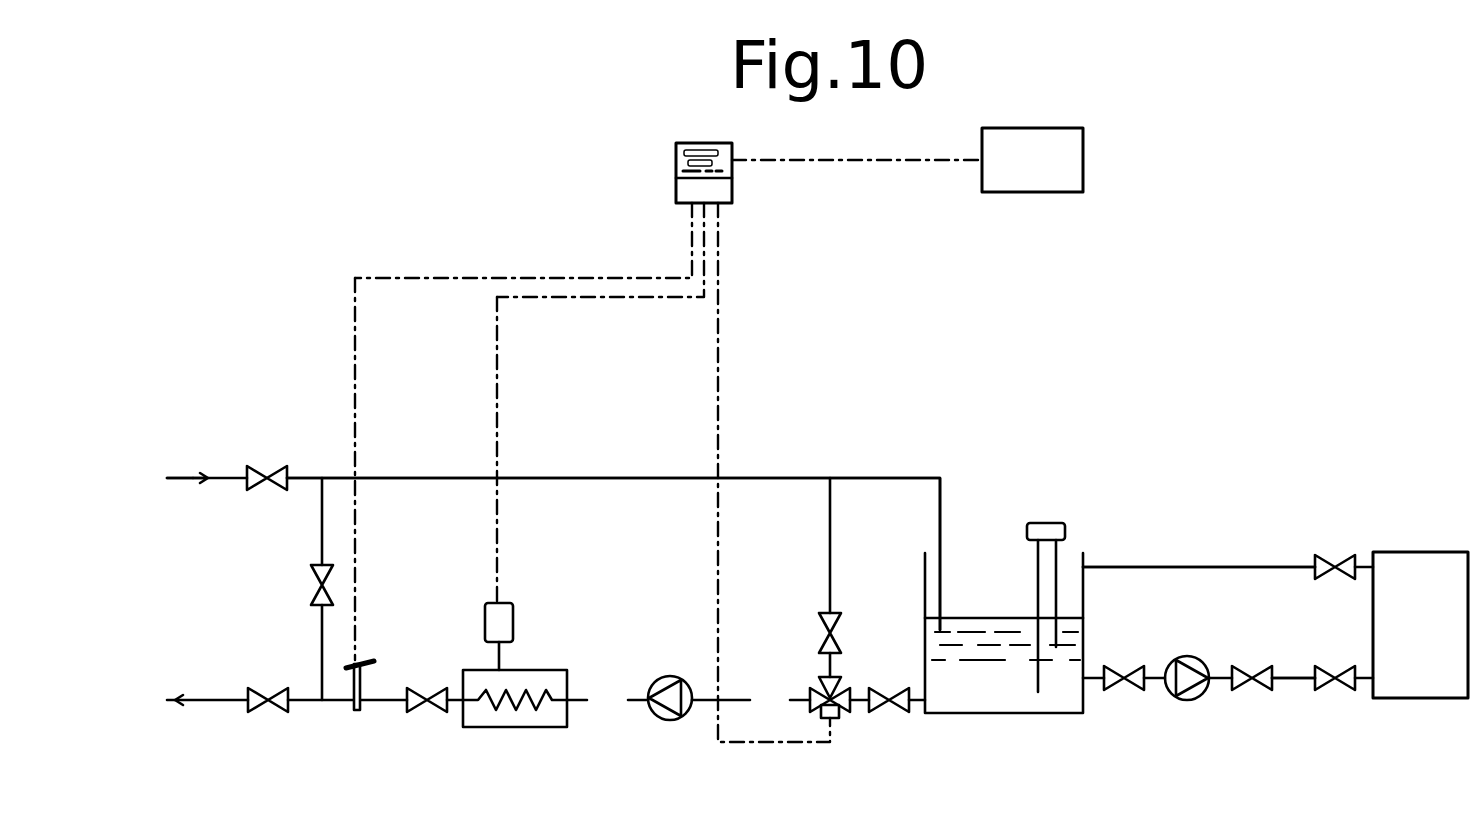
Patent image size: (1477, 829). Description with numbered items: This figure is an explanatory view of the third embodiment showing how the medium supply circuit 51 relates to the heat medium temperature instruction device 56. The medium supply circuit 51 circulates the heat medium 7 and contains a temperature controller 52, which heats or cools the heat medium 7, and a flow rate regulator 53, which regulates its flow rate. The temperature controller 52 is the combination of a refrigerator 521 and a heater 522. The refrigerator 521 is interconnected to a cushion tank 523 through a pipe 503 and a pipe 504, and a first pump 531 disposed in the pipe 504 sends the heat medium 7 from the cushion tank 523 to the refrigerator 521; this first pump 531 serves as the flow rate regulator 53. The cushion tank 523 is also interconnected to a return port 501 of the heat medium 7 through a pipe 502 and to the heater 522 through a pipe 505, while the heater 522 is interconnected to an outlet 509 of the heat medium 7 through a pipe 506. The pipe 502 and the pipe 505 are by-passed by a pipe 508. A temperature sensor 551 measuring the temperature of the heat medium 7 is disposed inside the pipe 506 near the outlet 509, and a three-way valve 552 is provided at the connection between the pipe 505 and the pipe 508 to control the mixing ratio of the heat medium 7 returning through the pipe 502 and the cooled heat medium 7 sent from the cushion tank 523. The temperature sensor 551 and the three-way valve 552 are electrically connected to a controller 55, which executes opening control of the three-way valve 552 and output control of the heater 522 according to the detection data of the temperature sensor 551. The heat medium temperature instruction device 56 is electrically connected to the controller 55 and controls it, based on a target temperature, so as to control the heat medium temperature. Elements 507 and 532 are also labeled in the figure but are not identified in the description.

The heat medium 7 is at (192, 466).
The medium supply circuit 51 is at (944, 342).
The temperature controller 52 is at (541, 745).
The flow rate regulator 53 is at (688, 745).
The controller 55 is at (733, 188).
The heat medium temperature instruction device 56 is at (1070, 160).
The return port 501 is at (247, 472).
The pipe 502 is at (793, 476).
The pipe 503 is at (1206, 565).
The pipe 504 is at (1296, 681).
The pipe 505 is at (860, 702).
The pipe 506 is at (337, 704).
The bypass pipe 507 is at (322, 538).
The pipe 508 is at (840, 498).
The outlet 509 is at (237, 704).
The refrigerator 521 is at (1444, 575).
The heater 522 is at (483, 727).
The cushion tank 523 is at (1022, 713).
The first pump 531 is at (1188, 701).
The supply pump 532 is at (659, 719).
The temperature sensor 551 is at (365, 685).
The three-way valve 552 is at (820, 714).